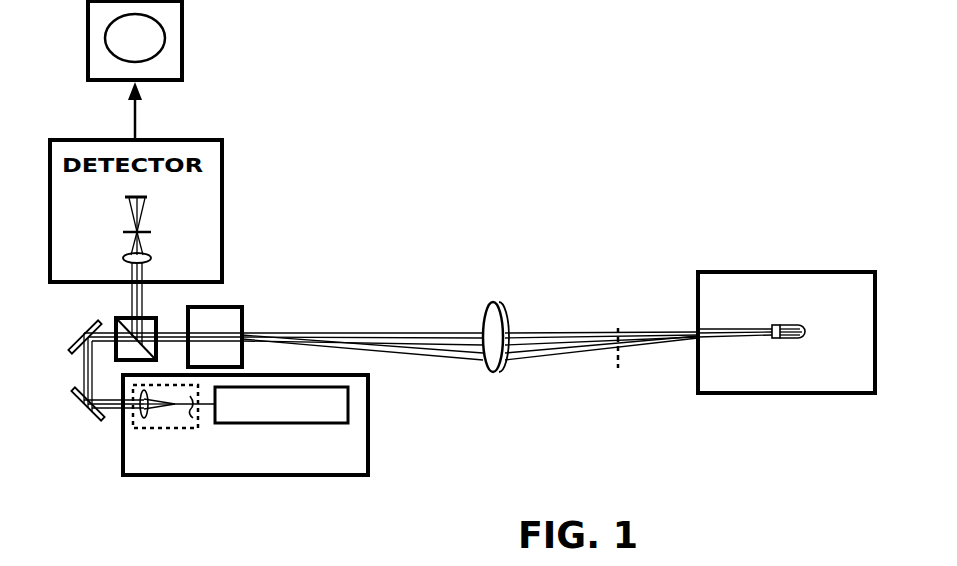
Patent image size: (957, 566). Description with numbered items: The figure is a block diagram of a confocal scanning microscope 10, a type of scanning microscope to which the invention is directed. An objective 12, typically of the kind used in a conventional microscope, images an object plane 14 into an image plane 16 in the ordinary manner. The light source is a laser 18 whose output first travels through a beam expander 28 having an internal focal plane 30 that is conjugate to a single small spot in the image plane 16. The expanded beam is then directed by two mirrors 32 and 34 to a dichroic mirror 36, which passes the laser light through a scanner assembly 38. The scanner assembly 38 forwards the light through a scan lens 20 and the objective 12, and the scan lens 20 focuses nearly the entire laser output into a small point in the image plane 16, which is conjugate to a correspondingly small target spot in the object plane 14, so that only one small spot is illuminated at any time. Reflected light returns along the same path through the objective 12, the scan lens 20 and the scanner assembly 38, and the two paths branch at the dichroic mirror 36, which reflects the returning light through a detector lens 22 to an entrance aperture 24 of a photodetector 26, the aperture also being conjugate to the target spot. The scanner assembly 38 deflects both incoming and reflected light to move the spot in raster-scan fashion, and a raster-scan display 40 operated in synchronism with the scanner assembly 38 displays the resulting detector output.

The optical measurement system 10 is at (566, 194).
The objective 12 is at (779, 352).
The object plane 14 is at (873, 368).
The image plane 16 is at (622, 319).
The laser 18 is at (338, 423).
The scan lens 20 is at (504, 305).
The detector lens 22 is at (145, 256).
The entrance aperture 24 is at (139, 231).
The photodetector 26 is at (128, 196).
The beam expander 28 is at (153, 429).
The internal focal plane 30 is at (193, 428).
The mirror 32 is at (88, 409).
The mirror 34 is at (84, 340).
The dichroic mirror 36 is at (126, 318).
The scanner assembly 38 is at (243, 309).
The raster-scan display 40 is at (146, 50).